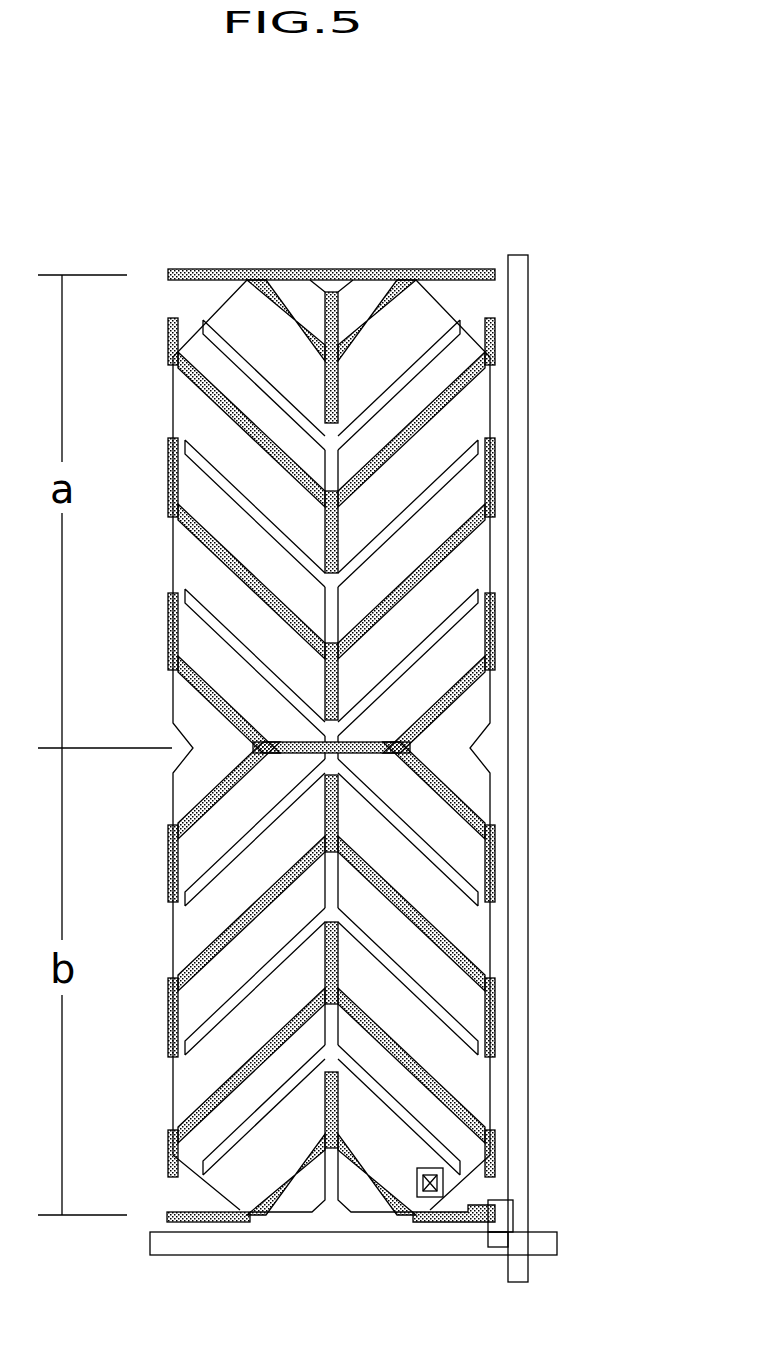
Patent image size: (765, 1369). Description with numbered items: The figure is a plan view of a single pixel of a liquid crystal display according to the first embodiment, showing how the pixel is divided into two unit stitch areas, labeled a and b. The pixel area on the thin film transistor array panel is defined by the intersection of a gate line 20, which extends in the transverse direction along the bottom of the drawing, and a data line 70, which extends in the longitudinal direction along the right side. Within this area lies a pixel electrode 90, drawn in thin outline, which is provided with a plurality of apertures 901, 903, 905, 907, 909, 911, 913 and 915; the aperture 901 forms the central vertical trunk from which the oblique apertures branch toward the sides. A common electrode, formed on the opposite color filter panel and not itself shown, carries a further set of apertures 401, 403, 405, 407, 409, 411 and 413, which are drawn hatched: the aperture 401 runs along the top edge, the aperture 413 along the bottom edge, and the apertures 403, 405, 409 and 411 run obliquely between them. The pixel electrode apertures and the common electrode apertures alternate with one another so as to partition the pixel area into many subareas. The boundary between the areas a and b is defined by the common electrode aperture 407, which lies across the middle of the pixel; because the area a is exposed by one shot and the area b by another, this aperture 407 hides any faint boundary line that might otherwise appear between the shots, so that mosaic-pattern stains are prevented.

The pixel electrode 90 is at (207, 280).
The aperture of the pixel electrode 901 is at (340, 314).
The aperture of the common electrode 401 is at (460, 270).
The aperture of the pixel electrode 903 is at (440, 345).
The aperture of the common electrode 403 is at (480, 387).
The aperture of the pixel electrode 905 is at (440, 497).
The aperture of the common electrode 405 is at (480, 537).
The aperture of the pixel electrode 907 is at (440, 648).
The aperture of the common electrode 407 is at (480, 690).
The aperture of the pixel electrode 909 is at (437, 847).
The aperture of the common electrode 409 is at (472, 955).
The aperture of the pixel electrode 911 is at (433, 995).
The data line 70 is at (518, 1065).
The aperture of the common electrode 411 is at (472, 1105).
The aperture of the pixel electrode 913 is at (437, 1145).
The aperture of the common electrode 413 is at (268, 1205).
The gate line 20 is at (308, 1243).
The aperture of the pixel electrode 915 is at (342, 1185).